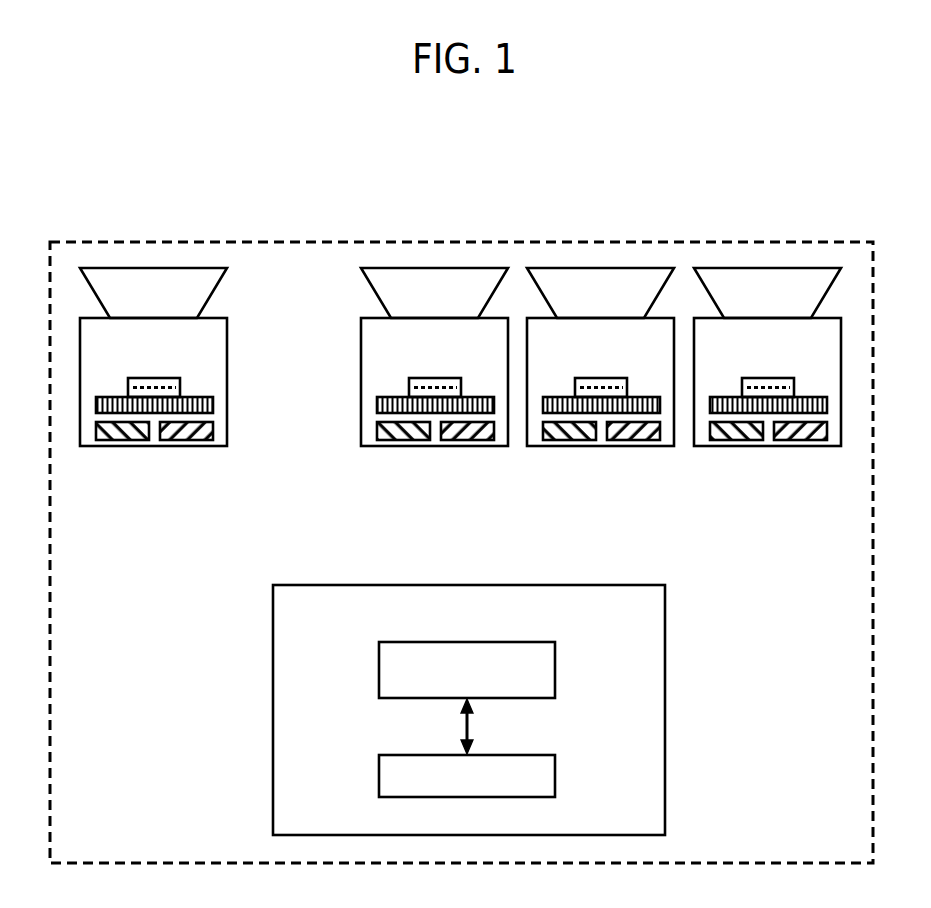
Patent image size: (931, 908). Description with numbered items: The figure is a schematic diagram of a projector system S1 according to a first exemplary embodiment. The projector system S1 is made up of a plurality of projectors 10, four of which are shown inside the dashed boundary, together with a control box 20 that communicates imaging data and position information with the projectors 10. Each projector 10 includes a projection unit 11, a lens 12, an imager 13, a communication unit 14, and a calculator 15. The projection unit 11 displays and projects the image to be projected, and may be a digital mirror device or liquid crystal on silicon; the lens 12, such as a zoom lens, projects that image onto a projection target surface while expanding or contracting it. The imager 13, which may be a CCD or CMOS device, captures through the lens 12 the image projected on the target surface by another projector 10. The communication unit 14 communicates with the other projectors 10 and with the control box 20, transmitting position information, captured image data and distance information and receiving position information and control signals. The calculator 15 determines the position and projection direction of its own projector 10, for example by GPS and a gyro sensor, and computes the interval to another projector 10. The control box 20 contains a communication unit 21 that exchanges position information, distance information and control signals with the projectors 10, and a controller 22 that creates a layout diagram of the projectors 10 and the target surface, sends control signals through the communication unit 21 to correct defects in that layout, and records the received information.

The projector system S1 is at (577, 242).
The projector 10 is at (460, 392).
The projection unit 11 is at (179, 387).
The lens 12 is at (208, 298).
The imager 13 is at (213, 404).
The communication unit 14 is at (187, 446).
The calculator 15 is at (123, 446).
The control box 20 is at (515, 698).
The communication unit 21 is at (555, 672).
The controller 22 is at (555, 778).